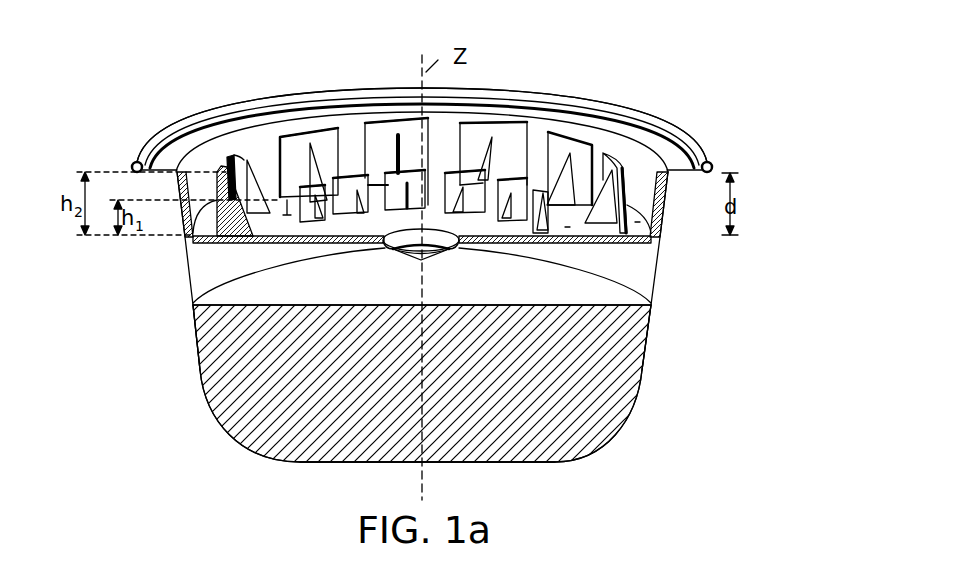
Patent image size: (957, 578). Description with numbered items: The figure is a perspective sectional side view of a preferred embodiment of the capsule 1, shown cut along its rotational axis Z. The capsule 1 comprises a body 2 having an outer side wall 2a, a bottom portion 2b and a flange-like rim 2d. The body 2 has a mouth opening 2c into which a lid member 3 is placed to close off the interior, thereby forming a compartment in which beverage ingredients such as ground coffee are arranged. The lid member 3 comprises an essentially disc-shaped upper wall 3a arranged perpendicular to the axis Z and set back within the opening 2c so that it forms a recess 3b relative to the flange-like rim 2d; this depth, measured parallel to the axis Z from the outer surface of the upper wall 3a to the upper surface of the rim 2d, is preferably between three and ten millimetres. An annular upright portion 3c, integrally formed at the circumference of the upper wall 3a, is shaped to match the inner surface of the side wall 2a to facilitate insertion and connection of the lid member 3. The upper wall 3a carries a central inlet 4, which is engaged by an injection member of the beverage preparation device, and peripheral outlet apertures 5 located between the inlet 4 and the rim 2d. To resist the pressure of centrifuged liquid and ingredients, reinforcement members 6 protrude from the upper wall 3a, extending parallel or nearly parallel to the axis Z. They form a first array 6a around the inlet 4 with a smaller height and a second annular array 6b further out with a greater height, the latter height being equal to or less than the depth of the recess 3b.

The capsule 1 is at (628, 79).
The body 2 is at (662, 230).
The outer side wall 2a is at (655, 273).
The bottom portion 2b is at (500, 464).
The mouth opening 2c is at (200, 264).
The flange-like rim 2d is at (165, 157).
The lid member 3 is at (176, 187).
The upper wall 3a is at (350, 213).
The recess 3b is at (443, 138).
The annular upright portion 3c is at (665, 200).
The central inlet 4 is at (423, 247).
The peripheral outlet apertures 5 is at (287, 213).
The reinforcement members 6 is at (392, 130).
The first array of reinforcement members 6a is at (367, 225).
The second annular array of reinforcement members 6b is at (240, 165).